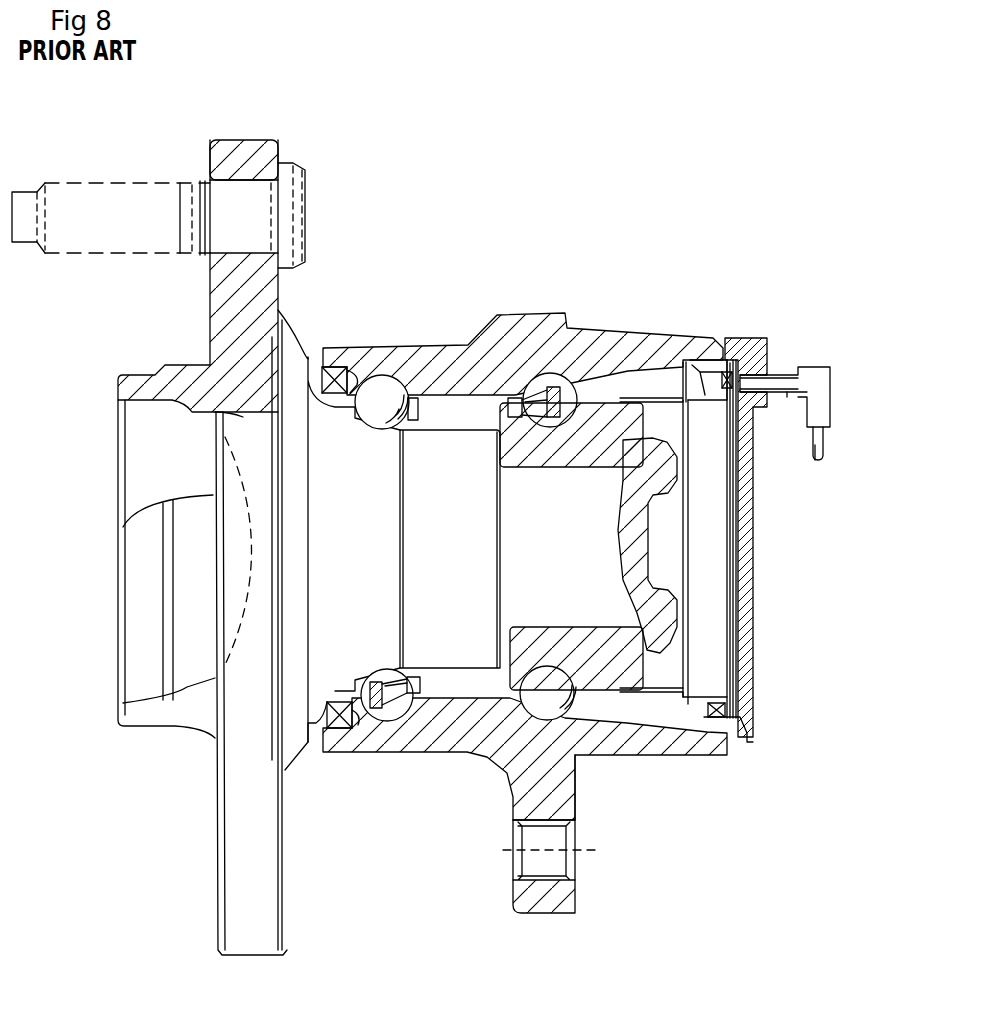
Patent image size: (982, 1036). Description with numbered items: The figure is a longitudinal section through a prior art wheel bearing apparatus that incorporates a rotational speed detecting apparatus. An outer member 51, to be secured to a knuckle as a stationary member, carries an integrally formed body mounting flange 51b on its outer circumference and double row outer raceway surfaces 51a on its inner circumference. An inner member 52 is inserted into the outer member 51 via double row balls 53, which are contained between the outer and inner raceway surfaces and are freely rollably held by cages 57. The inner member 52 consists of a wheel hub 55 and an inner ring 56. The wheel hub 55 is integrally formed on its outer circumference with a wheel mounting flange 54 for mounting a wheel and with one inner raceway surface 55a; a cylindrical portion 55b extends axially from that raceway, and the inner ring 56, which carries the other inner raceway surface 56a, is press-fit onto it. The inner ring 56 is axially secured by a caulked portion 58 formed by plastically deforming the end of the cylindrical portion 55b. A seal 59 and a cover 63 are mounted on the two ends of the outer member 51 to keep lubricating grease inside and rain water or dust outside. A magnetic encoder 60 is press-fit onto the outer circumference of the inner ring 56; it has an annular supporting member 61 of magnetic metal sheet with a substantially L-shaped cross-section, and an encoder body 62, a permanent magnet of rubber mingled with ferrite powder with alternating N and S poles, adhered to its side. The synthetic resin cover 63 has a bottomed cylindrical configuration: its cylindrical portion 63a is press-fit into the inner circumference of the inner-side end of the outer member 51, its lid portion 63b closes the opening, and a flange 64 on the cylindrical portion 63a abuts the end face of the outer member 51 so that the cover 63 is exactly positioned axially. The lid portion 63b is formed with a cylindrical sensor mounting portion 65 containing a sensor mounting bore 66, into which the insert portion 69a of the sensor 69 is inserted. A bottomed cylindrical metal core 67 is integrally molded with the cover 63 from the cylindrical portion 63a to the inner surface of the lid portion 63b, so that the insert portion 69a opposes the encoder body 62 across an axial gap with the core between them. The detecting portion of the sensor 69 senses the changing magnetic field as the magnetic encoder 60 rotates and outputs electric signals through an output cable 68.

The outer member 51 is at (462, 350).
The outer raceway surfaces 51a is at (383, 393).
The body mounting flange 51b is at (538, 900).
The inner member 52 is at (238, 466).
The double row balls 53 is at (537, 707).
The wheel mounting flange 54 is at (243, 152).
The wheel hub 55 is at (240, 410).
The inner raceway surface 55a is at (400, 413).
The cylindrical portion 55b is at (567, 443).
The inner ring 56 is at (573, 657).
The inner raceway surface 56a is at (522, 415).
The cages 57 is at (500, 650).
The caulked portion 58 is at (663, 638).
The seal 59 is at (330, 722).
The magnetic encoder 60 is at (817, 685).
The annular supporting member 61 is at (710, 683).
The encoder body 62 is at (743, 717).
The cover 63 is at (758, 587).
The cylindrical portion 63a is at (700, 360).
The lid portion 63b is at (747, 548).
The flange 64 is at (715, 338).
The sensor mounting portion 65 is at (757, 360).
The sensor mounting bore 66 is at (787, 392).
The metal core 67 is at (683, 375).
The output cable 68 is at (817, 453).
The sensor 69 is at (832, 356).
The insert portion 69a is at (778, 385).